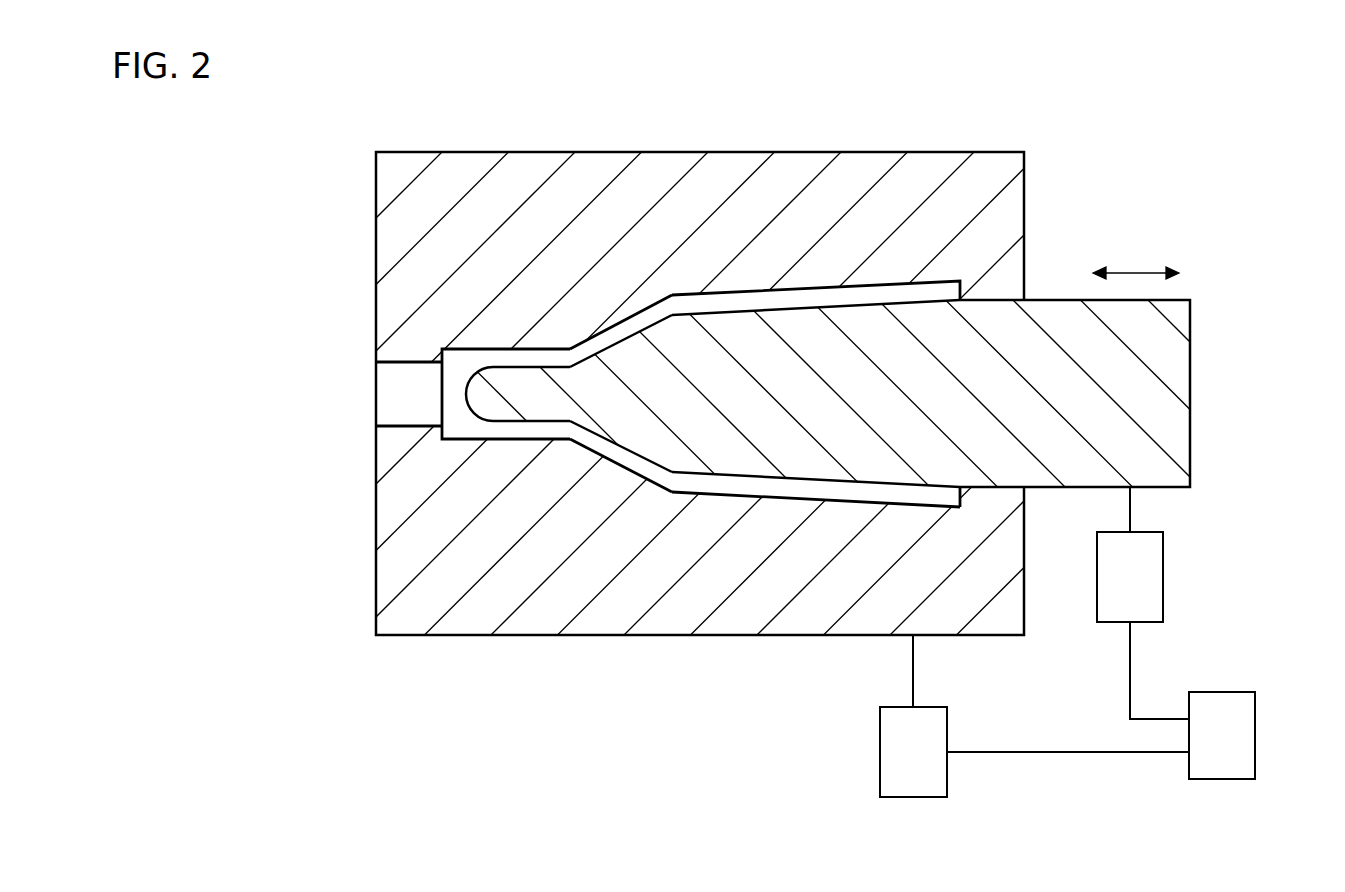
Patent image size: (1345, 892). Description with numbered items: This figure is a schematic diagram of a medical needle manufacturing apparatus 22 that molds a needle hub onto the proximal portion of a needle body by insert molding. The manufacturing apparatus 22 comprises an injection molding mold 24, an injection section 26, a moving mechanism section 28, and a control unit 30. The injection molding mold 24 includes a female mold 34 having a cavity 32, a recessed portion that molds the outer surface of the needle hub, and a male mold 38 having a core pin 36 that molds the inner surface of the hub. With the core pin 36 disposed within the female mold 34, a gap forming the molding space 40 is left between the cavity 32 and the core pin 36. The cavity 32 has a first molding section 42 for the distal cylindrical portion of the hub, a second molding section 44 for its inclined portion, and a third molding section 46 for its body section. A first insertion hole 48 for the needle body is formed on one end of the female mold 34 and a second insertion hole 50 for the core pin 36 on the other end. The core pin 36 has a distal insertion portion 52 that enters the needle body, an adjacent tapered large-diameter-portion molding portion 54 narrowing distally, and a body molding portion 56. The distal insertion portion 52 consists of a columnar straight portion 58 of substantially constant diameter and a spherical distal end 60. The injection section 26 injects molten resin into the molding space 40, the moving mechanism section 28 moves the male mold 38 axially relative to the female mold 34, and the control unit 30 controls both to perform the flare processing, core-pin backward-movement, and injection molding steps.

The manufacturing apparatus 22 is at (313, 128).
The injection molding mold 24 is at (1064, 182).
The injection section 26 is at (880, 751).
The moving mechanism section 28 is at (1163, 578).
The control unit 30 is at (1255, 735).
The cavity 32 is at (756, 95).
The female mold 34 is at (924, 153).
The core pin 36 is at (790, 478).
The male mold 38 is at (1196, 376).
The molding space 40 is at (710, 488).
The first molding section 42 is at (515, 352).
The second molding section 44 is at (622, 323).
The third molding section 46 is at (727, 293).
The first insertion hole 48 is at (405, 425).
The second insertion hole 50 is at (985, 462).
The distal insertion portion 52 is at (510, 412).
The large-diameter-portion molding portion 54 is at (586, 430).
The body molding portion 56 is at (867, 484).
The straight portion 58 is at (545, 412).
The spherical distal end 60 is at (466, 391).